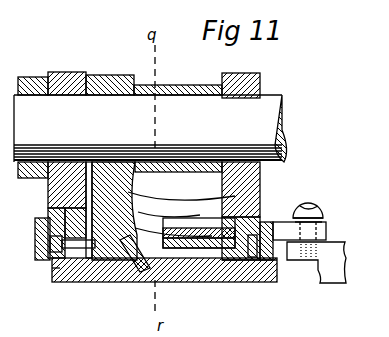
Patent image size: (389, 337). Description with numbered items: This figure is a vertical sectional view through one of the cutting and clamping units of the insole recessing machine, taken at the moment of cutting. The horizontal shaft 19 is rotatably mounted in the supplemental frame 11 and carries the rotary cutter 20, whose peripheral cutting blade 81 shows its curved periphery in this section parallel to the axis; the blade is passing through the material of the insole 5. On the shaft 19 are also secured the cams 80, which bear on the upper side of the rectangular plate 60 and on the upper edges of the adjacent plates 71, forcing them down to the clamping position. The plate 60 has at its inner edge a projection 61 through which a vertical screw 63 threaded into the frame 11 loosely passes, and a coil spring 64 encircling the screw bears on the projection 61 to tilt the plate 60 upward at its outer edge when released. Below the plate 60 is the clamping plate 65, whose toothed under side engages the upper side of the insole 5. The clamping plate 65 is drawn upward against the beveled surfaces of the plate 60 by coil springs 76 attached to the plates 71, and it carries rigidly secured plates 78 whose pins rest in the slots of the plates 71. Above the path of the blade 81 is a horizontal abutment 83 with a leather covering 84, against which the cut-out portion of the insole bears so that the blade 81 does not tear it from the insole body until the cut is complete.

The horizontal shaft 19 is at (278, 121).
The cams 80 is at (66, 72).
The plates 71 is at (50, 205).
The plates 78 is at (36, 222).
The coil spring 76 is at (38, 245).
The rotary cutter 20 is at (181, 207).
The leather covering 84 is at (167, 213).
The horizontal abutment 83 is at (199, 226).
The peripheral cutting blade 81 is at (126, 270).
The rectangular plate 60 is at (70, 268).
The clamping plate 65 is at (52, 277).
The insole 5 is at (230, 270).
The vertical screw 63 is at (312, 202).
The coil spring 64 is at (322, 213).
The projection 61 is at (326, 230).
The supplemental frame 11 is at (334, 270).